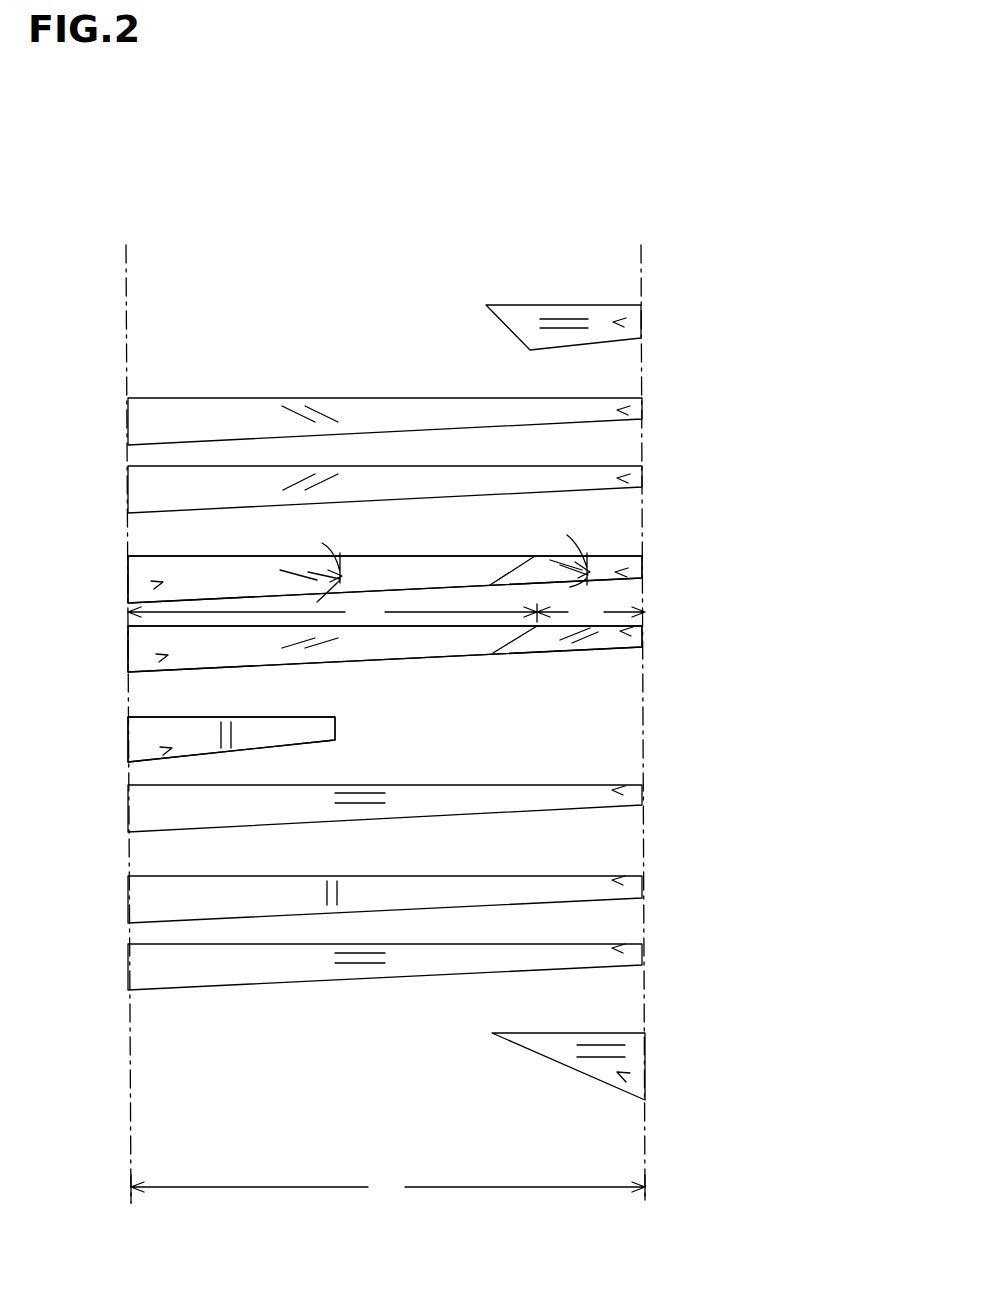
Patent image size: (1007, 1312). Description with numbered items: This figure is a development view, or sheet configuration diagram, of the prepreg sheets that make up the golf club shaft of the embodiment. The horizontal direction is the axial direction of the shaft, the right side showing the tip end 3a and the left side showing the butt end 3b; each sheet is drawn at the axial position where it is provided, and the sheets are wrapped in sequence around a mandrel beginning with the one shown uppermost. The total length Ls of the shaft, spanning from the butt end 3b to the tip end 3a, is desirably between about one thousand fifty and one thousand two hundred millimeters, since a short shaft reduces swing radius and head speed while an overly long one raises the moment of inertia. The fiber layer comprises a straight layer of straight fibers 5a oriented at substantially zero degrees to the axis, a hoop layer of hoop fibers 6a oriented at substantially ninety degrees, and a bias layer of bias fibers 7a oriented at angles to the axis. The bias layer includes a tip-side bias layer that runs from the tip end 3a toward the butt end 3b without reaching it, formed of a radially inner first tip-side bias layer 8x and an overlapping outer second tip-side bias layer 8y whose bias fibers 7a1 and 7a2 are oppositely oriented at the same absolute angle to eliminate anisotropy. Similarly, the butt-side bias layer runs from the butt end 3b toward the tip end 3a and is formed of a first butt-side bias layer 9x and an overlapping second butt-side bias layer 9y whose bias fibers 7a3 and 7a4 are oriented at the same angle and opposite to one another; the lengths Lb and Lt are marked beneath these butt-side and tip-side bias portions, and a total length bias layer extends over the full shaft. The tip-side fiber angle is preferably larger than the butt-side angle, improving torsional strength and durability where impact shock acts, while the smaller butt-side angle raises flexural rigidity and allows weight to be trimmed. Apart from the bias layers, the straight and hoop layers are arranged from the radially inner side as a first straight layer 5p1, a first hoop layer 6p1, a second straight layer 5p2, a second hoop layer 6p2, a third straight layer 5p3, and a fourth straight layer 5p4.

The tip end 3a is at (647, 1204).
The butt end 3b is at (133, 1209).
The straight fibers 5a is at (567, 319).
The first straight layer 5p1 is at (617, 334).
The second straight layer 5p2 is at (617, 800).
The third straight layer 5p3 is at (613, 957).
The fourth straight layer 5p4 is at (622, 1040).
The hoop fibers 6a is at (218, 733).
The first hoop layer 6p1 is at (203, 747).
The second hoop layer 6p2 is at (610, 888).
The bias fibers 7a is at (317, 412).
The bias fibers 7a1 is at (557, 565).
The bias fibers 7a2 is at (557, 637).
The bias fibers 7a3 is at (300, 572).
The bias fibers 7a4 is at (300, 648).
The first tip-side bias layer 8x is at (623, 557).
The second tip-side bias layer 8y is at (627, 642).
The first butt-side bias layer 9x is at (163, 557).
The second butt-side bias layer 9y is at (163, 638).
The base length Lb is at (332, 612).
The tip length Lt is at (591, 612).
The total length Ls is at (388, 1190).